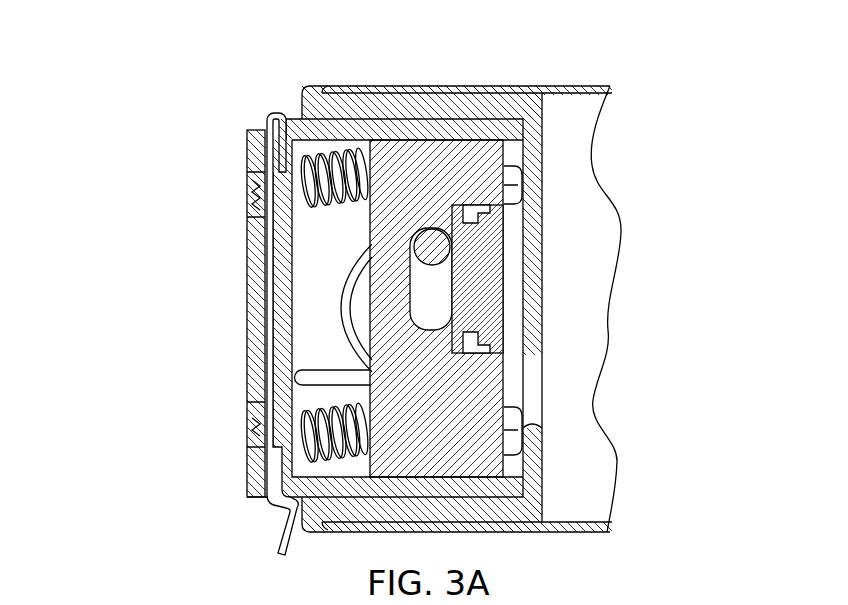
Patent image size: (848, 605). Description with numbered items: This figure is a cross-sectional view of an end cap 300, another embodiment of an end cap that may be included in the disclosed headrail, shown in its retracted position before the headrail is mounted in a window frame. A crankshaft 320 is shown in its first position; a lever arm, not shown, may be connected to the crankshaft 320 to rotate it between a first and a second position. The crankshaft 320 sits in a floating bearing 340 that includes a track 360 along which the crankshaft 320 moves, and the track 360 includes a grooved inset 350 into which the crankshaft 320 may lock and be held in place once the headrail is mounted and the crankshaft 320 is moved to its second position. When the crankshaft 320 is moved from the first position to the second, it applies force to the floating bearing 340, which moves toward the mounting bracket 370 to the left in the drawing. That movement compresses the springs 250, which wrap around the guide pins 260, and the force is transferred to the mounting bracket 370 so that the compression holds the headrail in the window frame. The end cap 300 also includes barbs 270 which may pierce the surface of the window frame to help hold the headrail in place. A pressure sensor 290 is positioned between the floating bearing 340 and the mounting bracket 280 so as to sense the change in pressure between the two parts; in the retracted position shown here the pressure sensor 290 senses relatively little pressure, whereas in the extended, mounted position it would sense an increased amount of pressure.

The end cap 300 is at (160, 65).
The springs 250 is at (340, 207).
The guide pins 260 is at (512, 185).
The barbs 270 is at (250, 203).
The mounting bracket 280 is at (267, 347).
The pressure sensor 290 is at (318, 380).
The crankshaft 320 is at (434, 256).
The floating bearing 340 is at (472, 452).
The grooved inset 350 is at (423, 326).
The track 360 is at (434, 293).
The mounting bracket 370 is at (252, 143).